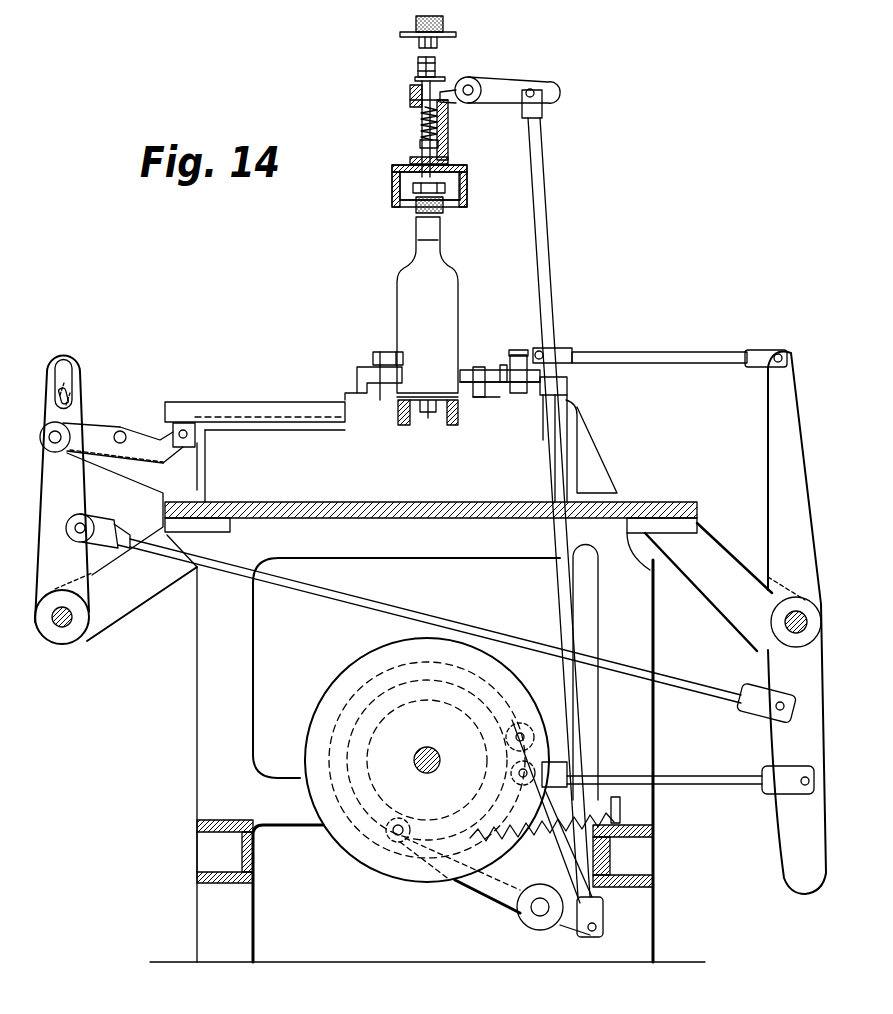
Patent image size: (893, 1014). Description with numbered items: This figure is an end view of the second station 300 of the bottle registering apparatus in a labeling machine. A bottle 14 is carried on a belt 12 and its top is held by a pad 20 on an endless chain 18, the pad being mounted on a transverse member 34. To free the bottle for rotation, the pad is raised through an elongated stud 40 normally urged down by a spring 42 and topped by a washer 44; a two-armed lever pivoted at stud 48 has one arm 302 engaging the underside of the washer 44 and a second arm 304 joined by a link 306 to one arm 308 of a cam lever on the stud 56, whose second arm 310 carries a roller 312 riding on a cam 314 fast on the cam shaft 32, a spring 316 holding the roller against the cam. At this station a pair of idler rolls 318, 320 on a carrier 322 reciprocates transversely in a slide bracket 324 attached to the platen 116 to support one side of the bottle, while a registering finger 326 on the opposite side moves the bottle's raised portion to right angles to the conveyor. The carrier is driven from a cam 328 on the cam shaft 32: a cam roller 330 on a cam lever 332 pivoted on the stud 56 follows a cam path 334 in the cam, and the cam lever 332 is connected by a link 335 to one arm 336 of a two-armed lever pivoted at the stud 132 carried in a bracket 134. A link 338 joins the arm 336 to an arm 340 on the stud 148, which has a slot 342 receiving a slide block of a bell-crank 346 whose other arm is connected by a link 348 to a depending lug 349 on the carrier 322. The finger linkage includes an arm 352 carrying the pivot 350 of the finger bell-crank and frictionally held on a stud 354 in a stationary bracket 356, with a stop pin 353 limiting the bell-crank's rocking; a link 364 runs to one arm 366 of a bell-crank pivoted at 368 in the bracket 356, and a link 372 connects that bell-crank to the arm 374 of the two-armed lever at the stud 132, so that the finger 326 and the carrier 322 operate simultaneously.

The belt 12 is at (428, 408).
The bottle 14 is at (427, 307).
The endless chain 18 is at (412, 46).
The pad 20 is at (448, 22).
The cam shaft 32 is at (428, 748).
The transverse member 34 is at (398, 190).
The elongated stud 40 is at (420, 98).
The spring 42 is at (420, 128).
The washer 44 is at (417, 76).
The stud 48 is at (473, 82).
The stud 56 is at (532, 910).
The platen 116 is at (372, 518).
The stud 132 is at (790, 630).
The bracket 134 is at (712, 588).
The stud 148 is at (70, 628).
The second station 300 is at (318, 293).
The arm 302 is at (409, 90).
The arm 304 is at (510, 84).
The link 306 is at (546, 208).
The arm 308 is at (572, 940).
The arm 310 is at (490, 887).
The roller 312 is at (390, 840).
The cam 314 is at (345, 712).
The spring 316 is at (555, 805).
The idler roll 318 is at (360, 365).
The idler roll 320 is at (354, 368).
The carrier 322 is at (228, 400).
The slide bracket 324 is at (427, 696).
The registering finger 326 is at (463, 368).
The cam 328 is at (343, 670).
The cam roller 330 is at (518, 712).
The cam lever 332 is at (560, 872).
The cam path 334 is at (78, 398).
The link 335 is at (700, 774).
The arm 336 is at (798, 880).
The link 338 is at (412, 622).
The arm 340 is at (65, 518).
The slot 342 is at (64, 375).
The bell-crank 346 is at (100, 428).
The link 348 is at (145, 438).
The depending lug 349 is at (197, 437).
The pivot 350 is at (480, 366).
The arm 352 is at (500, 396).
The stop pin 353 is at (505, 363).
The stud 354 is at (520, 352).
The stationary bracket 356 is at (600, 470).
The link 364 is at (545, 347).
The arm 366 is at (552, 418).
The pivot 368 is at (570, 384).
The link 372 is at (664, 352).
The arm 374 is at (770, 464).